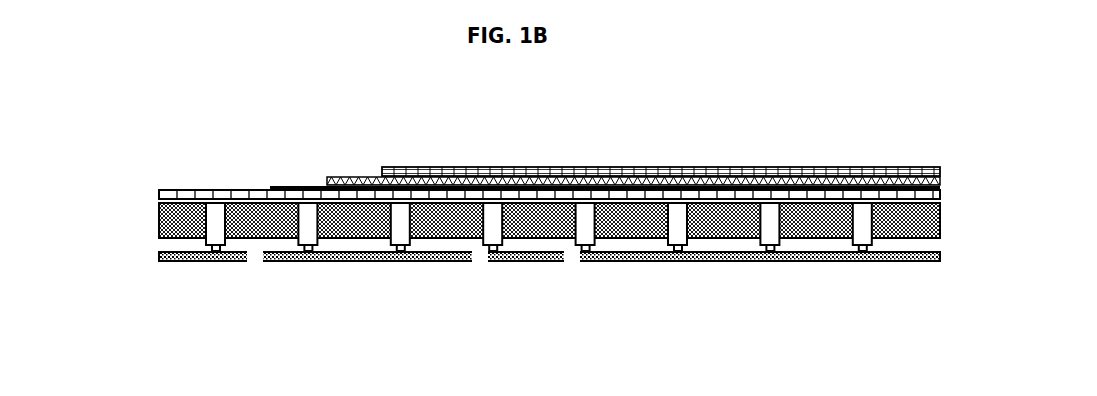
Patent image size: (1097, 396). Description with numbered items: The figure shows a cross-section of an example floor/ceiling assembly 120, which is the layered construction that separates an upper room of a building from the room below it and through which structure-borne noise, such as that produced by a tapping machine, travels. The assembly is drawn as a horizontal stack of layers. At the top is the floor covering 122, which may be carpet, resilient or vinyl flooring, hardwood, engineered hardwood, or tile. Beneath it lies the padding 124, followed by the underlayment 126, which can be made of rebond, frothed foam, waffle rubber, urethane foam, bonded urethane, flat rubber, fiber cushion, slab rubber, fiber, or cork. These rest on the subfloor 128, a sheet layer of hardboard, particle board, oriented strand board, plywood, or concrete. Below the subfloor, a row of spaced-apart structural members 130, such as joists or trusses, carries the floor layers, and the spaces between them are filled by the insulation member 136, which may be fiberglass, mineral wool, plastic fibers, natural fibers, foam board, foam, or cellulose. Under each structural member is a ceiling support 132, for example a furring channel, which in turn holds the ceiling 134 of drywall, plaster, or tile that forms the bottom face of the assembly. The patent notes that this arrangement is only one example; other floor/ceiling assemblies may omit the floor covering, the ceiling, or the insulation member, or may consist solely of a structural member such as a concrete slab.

The floor/ceiling assembly 120 is at (160, 156).
The floor covering 122 is at (393, 167).
The padding 124 is at (347, 177).
The underlayment 126 is at (290, 186).
The subfloor 128 is at (227, 190).
The structural member 130 is at (578, 247).
The ceiling support 132 is at (486, 247).
The ceiling 134 is at (357, 261).
The insulation member 136 is at (265, 238).